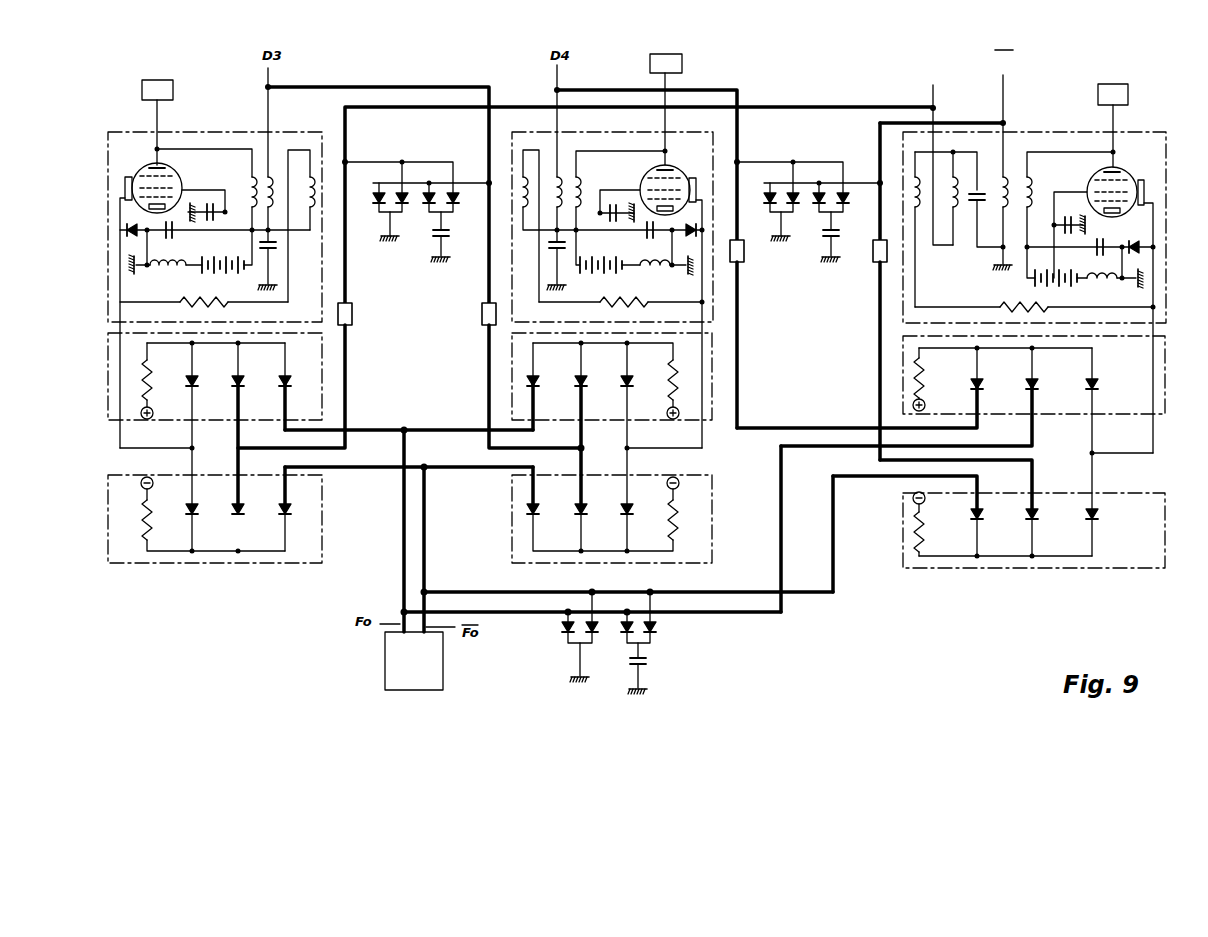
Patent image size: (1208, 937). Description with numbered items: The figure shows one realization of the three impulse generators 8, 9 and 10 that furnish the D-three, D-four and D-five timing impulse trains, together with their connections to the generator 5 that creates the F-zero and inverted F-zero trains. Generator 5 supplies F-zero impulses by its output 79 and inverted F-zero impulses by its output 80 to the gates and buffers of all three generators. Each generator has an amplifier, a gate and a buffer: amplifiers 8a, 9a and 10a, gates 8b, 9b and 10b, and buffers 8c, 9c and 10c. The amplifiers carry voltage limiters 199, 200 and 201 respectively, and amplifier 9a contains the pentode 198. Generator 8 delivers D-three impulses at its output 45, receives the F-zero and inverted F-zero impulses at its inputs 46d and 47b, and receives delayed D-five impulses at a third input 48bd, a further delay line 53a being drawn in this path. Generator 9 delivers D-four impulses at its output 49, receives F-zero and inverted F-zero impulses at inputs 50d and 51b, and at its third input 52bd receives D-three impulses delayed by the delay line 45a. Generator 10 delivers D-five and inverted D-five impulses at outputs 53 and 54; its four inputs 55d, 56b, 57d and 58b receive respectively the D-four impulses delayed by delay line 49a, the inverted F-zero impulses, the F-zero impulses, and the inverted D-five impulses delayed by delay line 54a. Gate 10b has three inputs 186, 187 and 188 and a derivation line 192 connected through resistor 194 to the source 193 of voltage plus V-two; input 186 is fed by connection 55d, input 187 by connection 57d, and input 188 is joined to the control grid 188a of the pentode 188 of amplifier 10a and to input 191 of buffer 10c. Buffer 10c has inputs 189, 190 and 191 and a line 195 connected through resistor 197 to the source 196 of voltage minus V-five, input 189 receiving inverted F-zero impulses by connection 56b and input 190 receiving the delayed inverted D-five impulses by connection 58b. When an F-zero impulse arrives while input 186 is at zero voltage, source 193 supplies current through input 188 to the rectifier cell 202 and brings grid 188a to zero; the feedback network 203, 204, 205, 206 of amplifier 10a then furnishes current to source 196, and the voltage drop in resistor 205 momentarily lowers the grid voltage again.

The generator 5 is at (398, 668).
The generator 8 is at (248, 358).
The amplifier 8a is at (245, 256).
The gate 8b is at (330, 371).
The buffer 8c is at (300, 550).
The generator 9 is at (650, 367).
The amplifier 9a is at (650, 249).
The gate 9b is at (690, 387).
The buffer 9c is at (695, 550).
The generator 10 is at (970, 356).
The amplifier 10a is at (1020, 253).
The gate 10b is at (951, 391).
The buffer 10c is at (999, 530).
The output 45 is at (272, 85).
The delay line 45a is at (485, 318).
The input 46d is at (380, 428).
The bus line 47b is at (352, 471).
The input 48bd is at (347, 142).
The output 49 is at (560, 88).
The delay line 49a is at (742, 252).
The input 50d is at (447, 428).
The input 51b is at (482, 471).
The input 52bd is at (488, 266).
The output 53 is at (936, 105).
The delay line 53a is at (353, 312).
The output 54 is at (1006, 115).
The delay line 54a is at (877, 252).
The input connection 55d is at (741, 326).
The input connection 56b is at (805, 598).
The input connection 57d is at (779, 494).
The input connection 58b is at (878, 350).
The output 79 is at (402, 567).
The output 80 is at (426, 567).
The input 186 is at (980, 421).
The input 187 is at (1035, 421).
The input 188 is at (1124, 178).
The control grid 188a is at (1150, 208).
The input 189 is at (983, 486).
The input 190 is at (1038, 486).
The input 191 is at (1097, 486).
The derivation line 192 is at (1071, 350).
The source 193 is at (927, 402).
The resistor 194 is at (928, 372).
The line 195 is at (1005, 558).
The source 196 is at (927, 504).
The resistor 197 is at (928, 535).
The pentode 198 is at (645, 179).
The voltage limiter 199 is at (176, 91).
The voltage limiter 200 is at (685, 67).
The voltage limiter 201 is at (1130, 96).
The rectifier cell 202 is at (1140, 253).
The feedback network element 203 is at (975, 205).
The feedback network element 204 is at (915, 195).
The resistor 205 is at (1000, 303).
The feedback network element 206 is at (1150, 310).